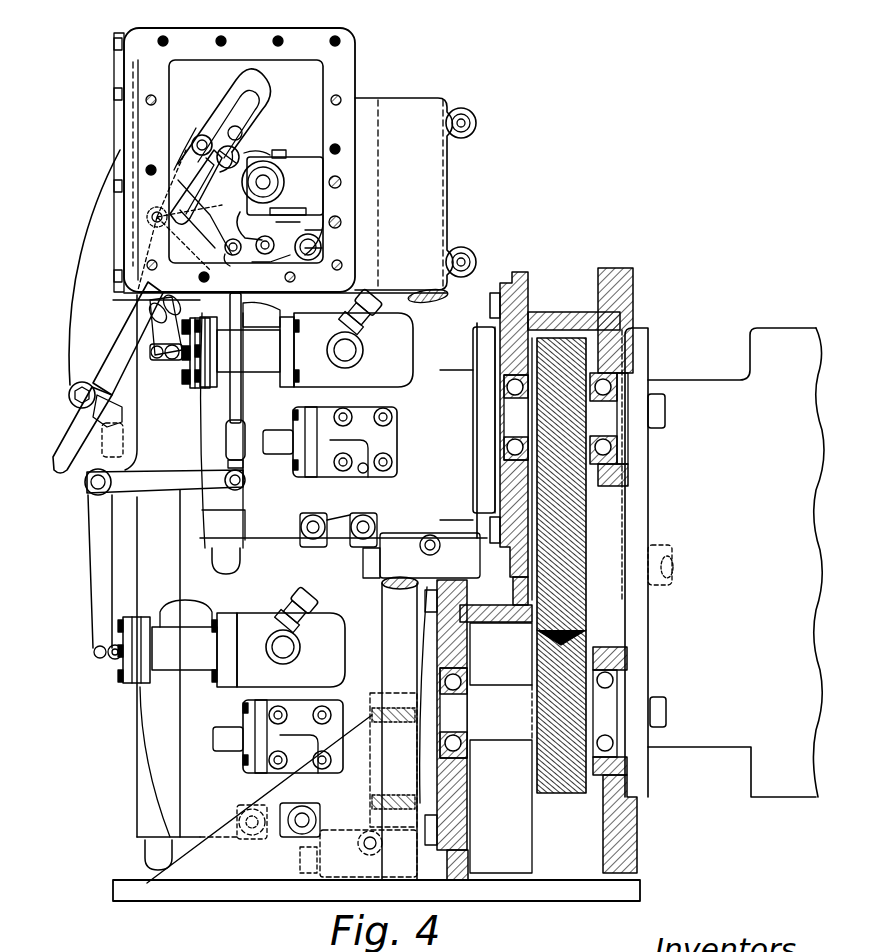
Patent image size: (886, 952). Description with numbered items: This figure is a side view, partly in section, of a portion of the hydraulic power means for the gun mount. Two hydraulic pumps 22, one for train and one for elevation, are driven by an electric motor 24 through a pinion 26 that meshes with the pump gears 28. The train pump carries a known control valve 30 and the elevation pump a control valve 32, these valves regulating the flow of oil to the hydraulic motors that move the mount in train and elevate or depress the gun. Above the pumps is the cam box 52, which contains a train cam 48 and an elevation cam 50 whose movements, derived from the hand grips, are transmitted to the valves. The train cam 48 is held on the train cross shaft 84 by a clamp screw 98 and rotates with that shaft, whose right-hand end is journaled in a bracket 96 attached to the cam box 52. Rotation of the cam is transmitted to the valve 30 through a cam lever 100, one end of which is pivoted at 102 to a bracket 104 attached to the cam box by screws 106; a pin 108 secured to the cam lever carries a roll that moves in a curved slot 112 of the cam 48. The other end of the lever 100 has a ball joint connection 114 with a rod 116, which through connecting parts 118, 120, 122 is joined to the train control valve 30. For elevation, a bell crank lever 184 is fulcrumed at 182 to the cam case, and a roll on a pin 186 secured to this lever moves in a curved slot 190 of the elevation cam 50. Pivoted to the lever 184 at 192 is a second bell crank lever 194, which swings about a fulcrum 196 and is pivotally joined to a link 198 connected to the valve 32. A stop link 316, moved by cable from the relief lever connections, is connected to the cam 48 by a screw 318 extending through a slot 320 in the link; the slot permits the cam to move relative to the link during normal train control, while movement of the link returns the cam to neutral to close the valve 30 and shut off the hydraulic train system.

The hydraulic pumps 22 is at (321, 603).
The electric motor 24 is at (724, 562).
The pinion 26 is at (586, 522).
The pump gears 28 is at (556, 336).
The train control valve 30 is at (231, 636).
The elevation control valve 32 is at (304, 337).
The train cam 48 is at (285, 222).
The elevation cam 50 is at (235, 82).
The cam box 52 is at (346, 58).
The train cross shaft 84 is at (270, 180).
The bracket 96 is at (302, 188).
The clamp screw 98 is at (298, 156).
The cam lever 100 is at (305, 260).
The pivot 102 is at (324, 248).
The bracket 104 is at (324, 230).
The screws 106 is at (342, 222).
The pin 108 is at (265, 254).
The curved slot 112 is at (226, 244).
The ball joint connection 114 is at (226, 254).
The rod 116 is at (230, 406).
The connecting part 118 is at (148, 482).
The connecting part 120 is at (98, 550).
The connecting part 122 is at (110, 660).
The fulcrum 182 is at (150, 222).
The bell crank lever 184 is at (182, 182).
The pin 186 is at (202, 135).
The curved slot 190 is at (246, 96).
The pivot 192 is at (186, 312).
The bell crank lever 194 is at (163, 358).
The fulcrum 196 is at (150, 322).
The link 198 is at (170, 374).
The stop link 316 is at (232, 164).
The screw 318 is at (262, 164).
The slot 320 is at (236, 150).